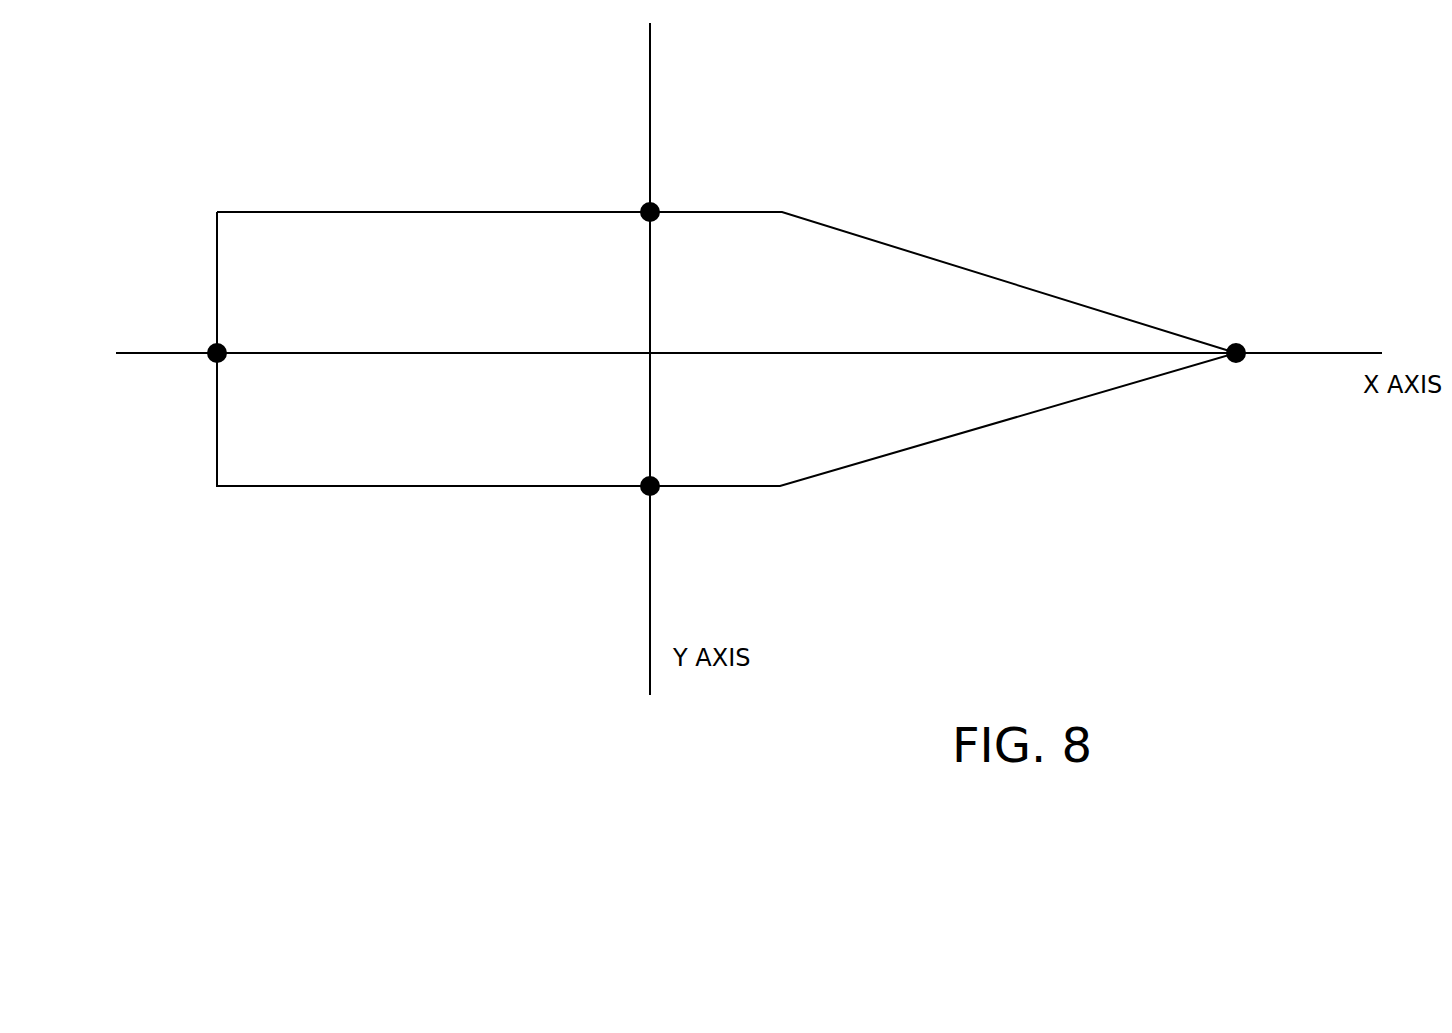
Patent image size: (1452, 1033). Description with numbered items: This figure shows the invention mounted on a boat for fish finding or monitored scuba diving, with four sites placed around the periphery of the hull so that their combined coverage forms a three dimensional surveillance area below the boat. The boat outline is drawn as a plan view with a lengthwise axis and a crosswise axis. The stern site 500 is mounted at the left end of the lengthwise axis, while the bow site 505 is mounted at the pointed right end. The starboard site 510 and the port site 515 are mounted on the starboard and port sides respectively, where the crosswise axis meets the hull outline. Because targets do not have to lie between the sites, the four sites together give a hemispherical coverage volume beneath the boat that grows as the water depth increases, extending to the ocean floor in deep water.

The site X1 500 is at (211, 347).
The site X2 505 is at (1244, 360).
The site Y1 510 is at (643, 490).
The site Y2 515 is at (643, 208).